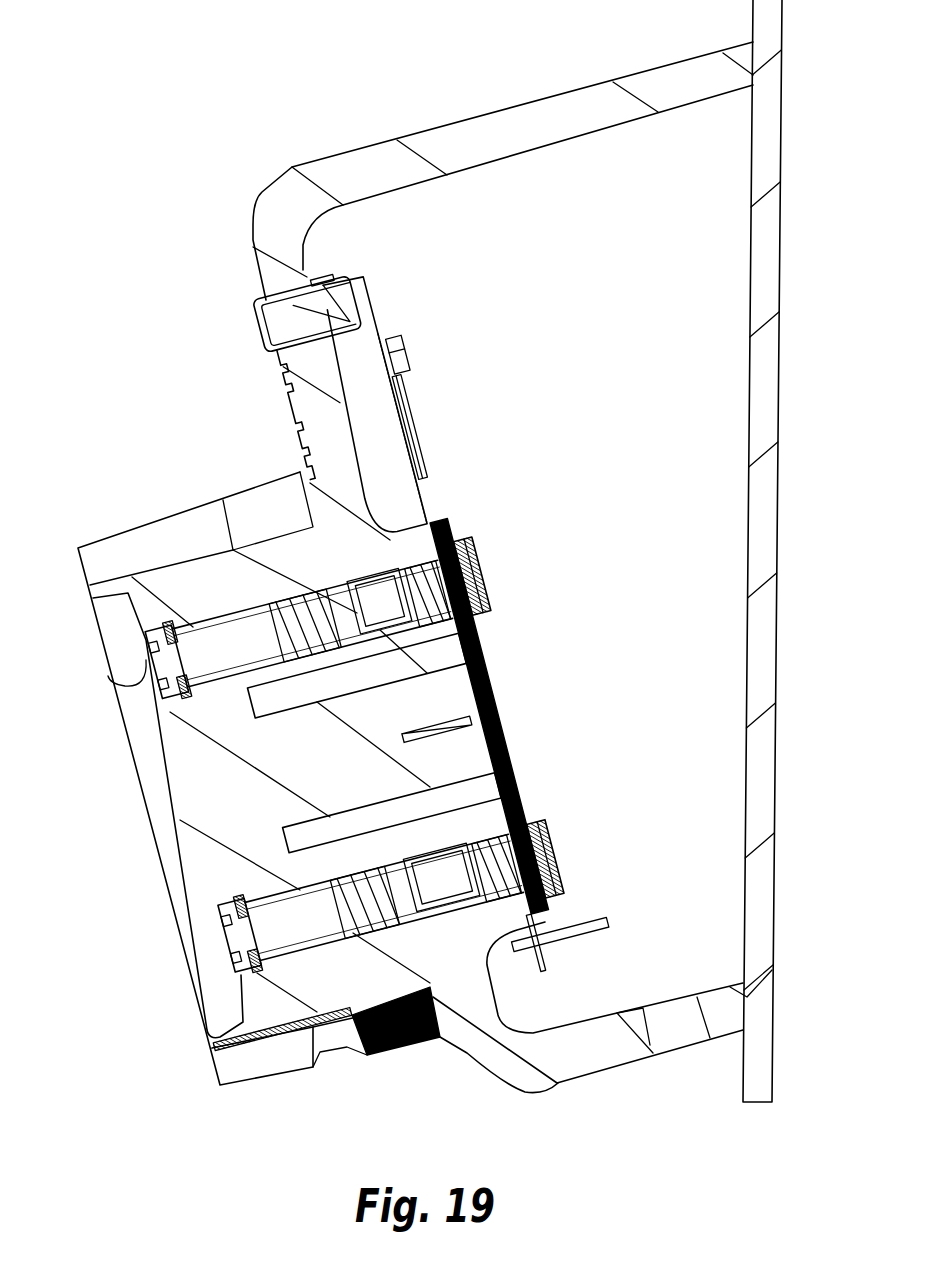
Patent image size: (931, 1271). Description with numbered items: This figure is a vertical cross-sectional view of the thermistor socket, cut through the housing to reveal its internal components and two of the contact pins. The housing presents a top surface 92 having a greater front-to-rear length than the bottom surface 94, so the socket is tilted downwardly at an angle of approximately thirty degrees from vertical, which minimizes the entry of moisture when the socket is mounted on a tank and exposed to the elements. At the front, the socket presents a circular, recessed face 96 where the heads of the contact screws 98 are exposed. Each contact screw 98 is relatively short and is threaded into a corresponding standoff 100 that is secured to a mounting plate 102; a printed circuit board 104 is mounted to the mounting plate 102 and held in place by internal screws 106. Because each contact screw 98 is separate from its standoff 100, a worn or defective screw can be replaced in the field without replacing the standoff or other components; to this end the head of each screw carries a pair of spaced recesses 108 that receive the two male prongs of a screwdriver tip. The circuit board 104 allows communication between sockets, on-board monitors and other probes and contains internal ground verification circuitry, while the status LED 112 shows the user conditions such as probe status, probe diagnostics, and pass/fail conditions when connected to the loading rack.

The top surface 92 is at (480, 113).
The bottom surface 94 is at (558, 1083).
The recessed face 96 is at (195, 791).
The contact screw 98 is at (104, 645).
The standoff 100 is at (293, 597).
The mounting plate 102 is at (466, 697).
The printed circuit board 104 is at (492, 702).
The internal screw 106 is at (456, 546).
The spaced recess 108 is at (158, 680).
The status LED 112 is at (253, 318).